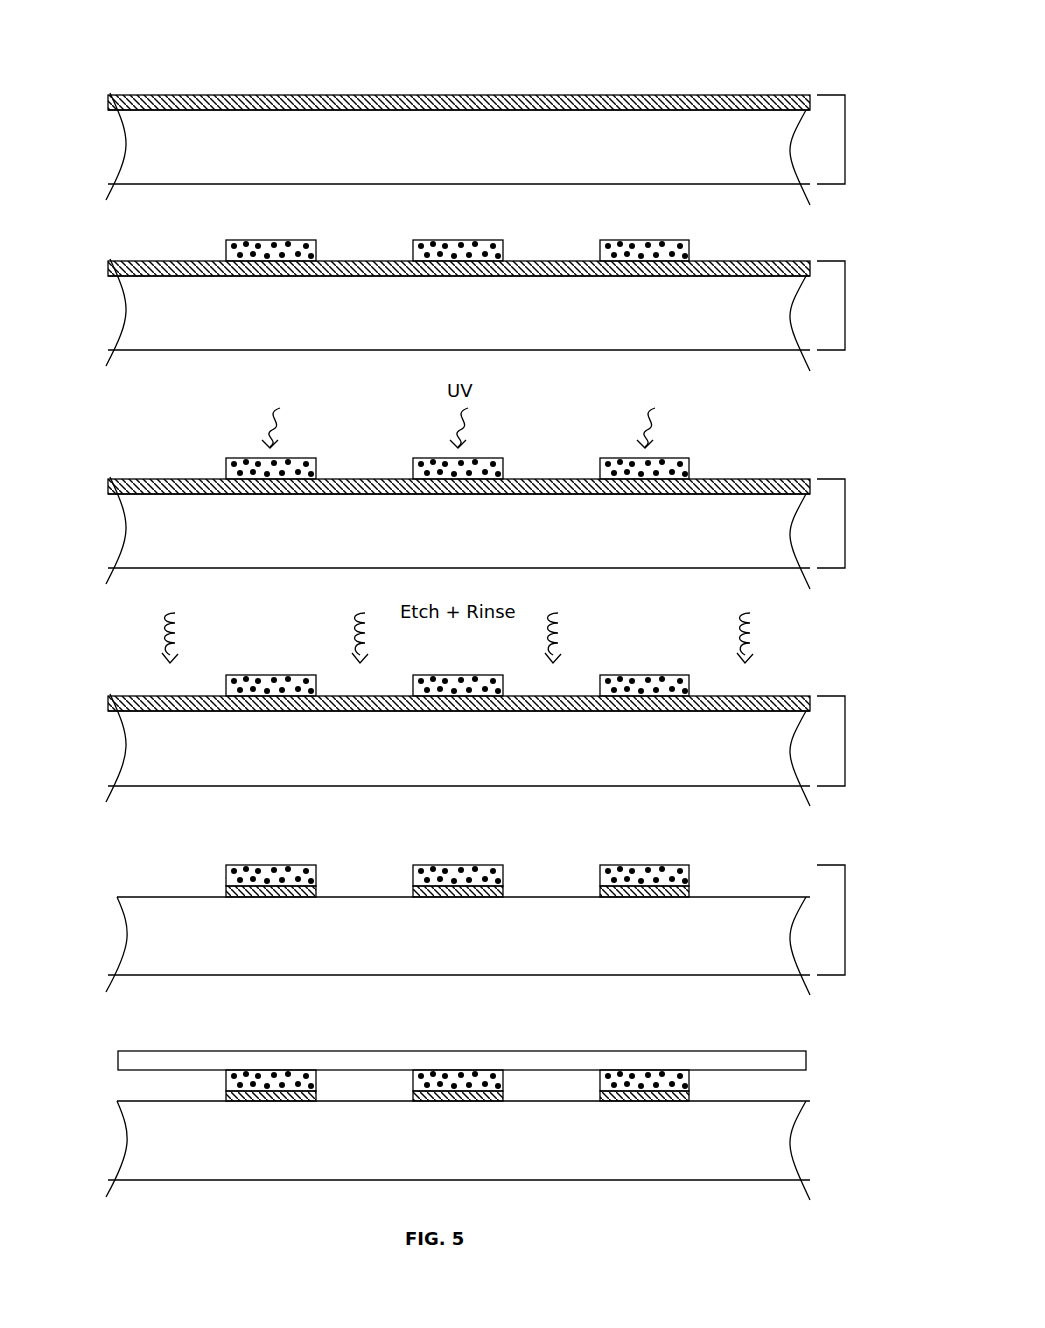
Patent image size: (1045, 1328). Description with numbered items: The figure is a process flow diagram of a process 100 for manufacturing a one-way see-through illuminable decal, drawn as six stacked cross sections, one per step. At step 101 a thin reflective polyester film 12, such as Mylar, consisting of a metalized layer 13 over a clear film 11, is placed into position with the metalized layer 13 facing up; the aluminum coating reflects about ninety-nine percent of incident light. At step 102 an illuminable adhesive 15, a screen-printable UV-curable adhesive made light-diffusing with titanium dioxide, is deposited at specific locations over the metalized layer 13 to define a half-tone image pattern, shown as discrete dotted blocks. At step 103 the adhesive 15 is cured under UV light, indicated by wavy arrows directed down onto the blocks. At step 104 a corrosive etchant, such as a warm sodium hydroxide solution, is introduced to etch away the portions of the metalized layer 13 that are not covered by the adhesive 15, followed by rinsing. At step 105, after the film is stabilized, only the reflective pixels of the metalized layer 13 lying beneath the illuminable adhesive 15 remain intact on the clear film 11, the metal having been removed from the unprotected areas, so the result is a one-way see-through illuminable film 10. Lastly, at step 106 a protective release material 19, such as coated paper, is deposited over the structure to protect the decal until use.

The process 100 is at (68, 29).
The step 101 is at (112, 148).
The step 102 is at (112, 314).
The step 103 is at (112, 532).
The step 104 is at (112, 748).
The step 105 is at (112, 938).
The step 106 is at (112, 1141).
The one-way see-through illuminable film 10 is at (845, 920).
The clear film 11 is at (700, 154).
The reflective polyester film 12 is at (845, 140).
The metalized layer 13 is at (765, 100).
The illuminable adhesive 15 is at (675, 253).
The protective release material 19 is at (762, 1060).